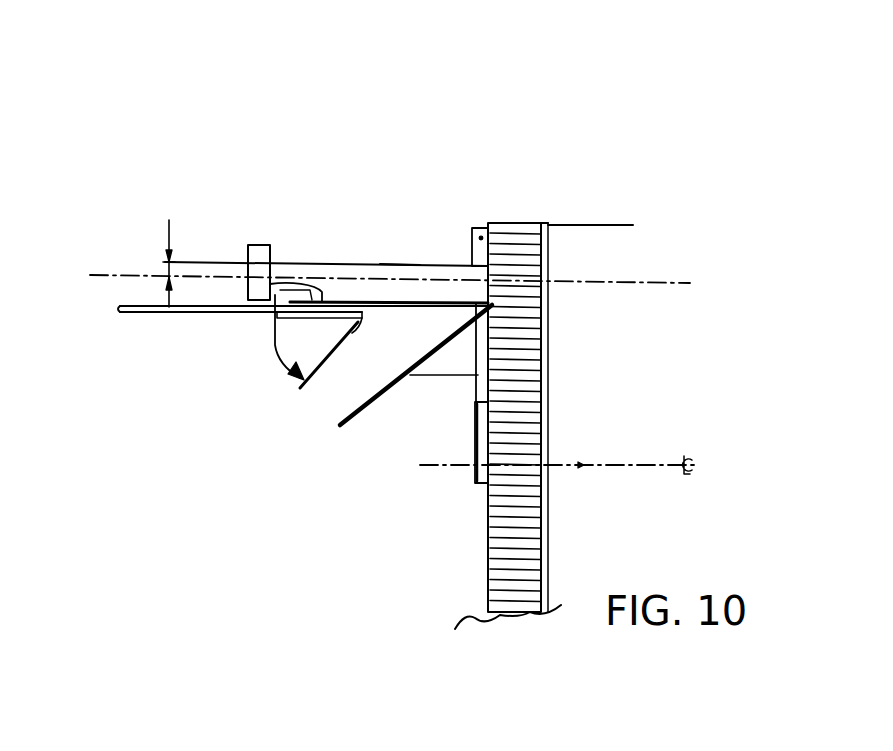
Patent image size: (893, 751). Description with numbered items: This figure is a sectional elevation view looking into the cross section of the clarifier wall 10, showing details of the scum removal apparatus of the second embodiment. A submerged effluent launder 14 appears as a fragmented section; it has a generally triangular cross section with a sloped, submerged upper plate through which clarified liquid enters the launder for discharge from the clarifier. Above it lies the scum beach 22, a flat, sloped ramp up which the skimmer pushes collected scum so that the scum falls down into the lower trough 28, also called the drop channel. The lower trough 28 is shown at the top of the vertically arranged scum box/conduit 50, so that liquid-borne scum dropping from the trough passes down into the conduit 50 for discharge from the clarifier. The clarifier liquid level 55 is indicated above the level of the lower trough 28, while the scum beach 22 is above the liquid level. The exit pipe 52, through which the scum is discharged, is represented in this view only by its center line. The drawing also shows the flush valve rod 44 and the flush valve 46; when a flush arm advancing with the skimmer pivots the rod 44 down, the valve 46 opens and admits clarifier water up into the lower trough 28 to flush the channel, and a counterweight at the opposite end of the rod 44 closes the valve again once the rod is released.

The clarifier wall 10 is at (550, 333).
The submerged effluent launder 14 is at (404, 390).
The scum beach 22 is at (425, 266).
The lower trough 28 is at (395, 266).
The flush valve rod 44 is at (137, 317).
The flush valve 46 is at (274, 295).
The scum box/conduit 50 is at (475, 442).
The exit pipe 52 is at (647, 463).
The clarifier liquid level 55 is at (115, 275).